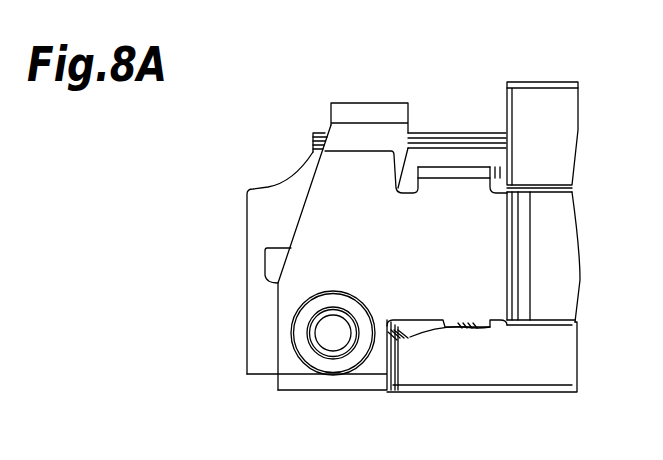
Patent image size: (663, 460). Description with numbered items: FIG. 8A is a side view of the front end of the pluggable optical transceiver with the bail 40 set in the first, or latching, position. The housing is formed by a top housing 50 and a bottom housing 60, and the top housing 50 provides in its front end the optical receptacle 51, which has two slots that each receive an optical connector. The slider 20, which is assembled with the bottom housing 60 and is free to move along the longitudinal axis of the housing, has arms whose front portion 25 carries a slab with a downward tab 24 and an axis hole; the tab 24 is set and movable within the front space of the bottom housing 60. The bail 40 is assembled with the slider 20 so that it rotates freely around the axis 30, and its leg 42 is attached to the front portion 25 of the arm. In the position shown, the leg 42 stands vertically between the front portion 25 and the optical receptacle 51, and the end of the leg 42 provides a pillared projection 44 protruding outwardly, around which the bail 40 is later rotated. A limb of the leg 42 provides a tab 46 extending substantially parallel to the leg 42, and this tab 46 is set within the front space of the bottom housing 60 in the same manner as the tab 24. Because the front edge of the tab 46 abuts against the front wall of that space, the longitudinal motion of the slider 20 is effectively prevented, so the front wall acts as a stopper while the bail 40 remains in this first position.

The slider 20 is at (567, 243).
The tab 24 is at (487, 322).
The front portion 25 is at (338, 185).
The axis 30 is at (333, 340).
The bail 40 is at (416, 106).
The leg 42 is at (350, 137).
The projection 44 is at (333, 367).
The tab 46 is at (425, 327).
The top housing 50 is at (542, 98).
The optical receptacle 51 is at (450, 158).
The bottom housing 60 is at (482, 383).